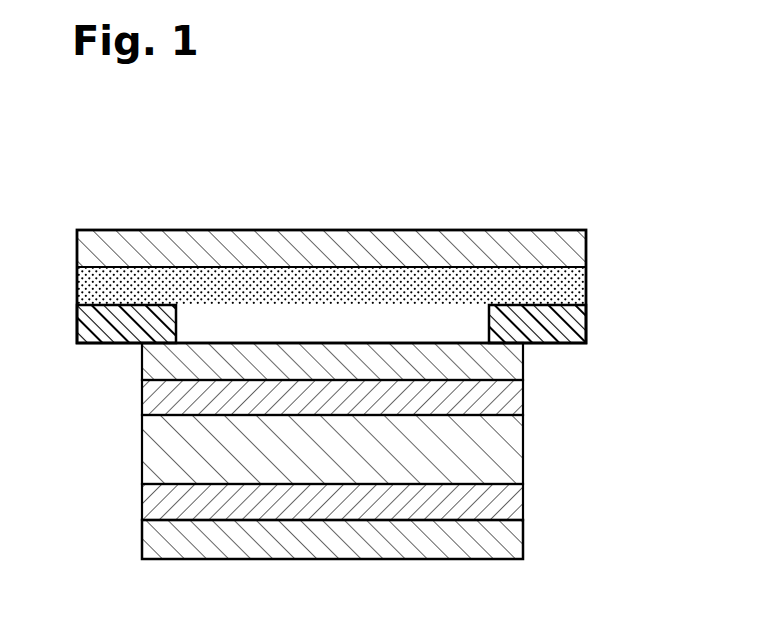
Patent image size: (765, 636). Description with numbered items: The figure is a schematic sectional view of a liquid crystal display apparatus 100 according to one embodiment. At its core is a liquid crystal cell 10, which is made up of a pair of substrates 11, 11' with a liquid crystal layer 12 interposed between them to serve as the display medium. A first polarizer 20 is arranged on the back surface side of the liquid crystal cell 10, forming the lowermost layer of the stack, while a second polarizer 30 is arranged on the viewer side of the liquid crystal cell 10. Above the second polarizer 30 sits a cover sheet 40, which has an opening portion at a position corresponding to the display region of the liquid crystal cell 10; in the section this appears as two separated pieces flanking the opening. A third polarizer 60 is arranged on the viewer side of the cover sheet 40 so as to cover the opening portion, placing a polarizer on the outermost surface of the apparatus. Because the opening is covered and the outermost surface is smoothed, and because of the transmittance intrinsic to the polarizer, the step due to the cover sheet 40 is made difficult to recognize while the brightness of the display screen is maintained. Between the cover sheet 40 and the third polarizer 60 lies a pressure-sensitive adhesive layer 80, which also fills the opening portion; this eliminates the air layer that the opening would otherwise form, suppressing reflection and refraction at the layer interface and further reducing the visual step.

The liquid crystal display apparatus 100 is at (574, 137).
The third polarizer 60 is at (570, 250).
The pressure-sensitive adhesive layer 80 is at (570, 287).
The cover sheet 40 is at (570, 325).
The second polarizer 30 is at (512, 366).
The liquid crystal cell 10 is at (406, 450).
The substrate 11 is at (382, 397).
The liquid crystal layer 12 is at (512, 452).
The substrate 11' is at (385, 502).
The first polarizer 20 is at (512, 542).